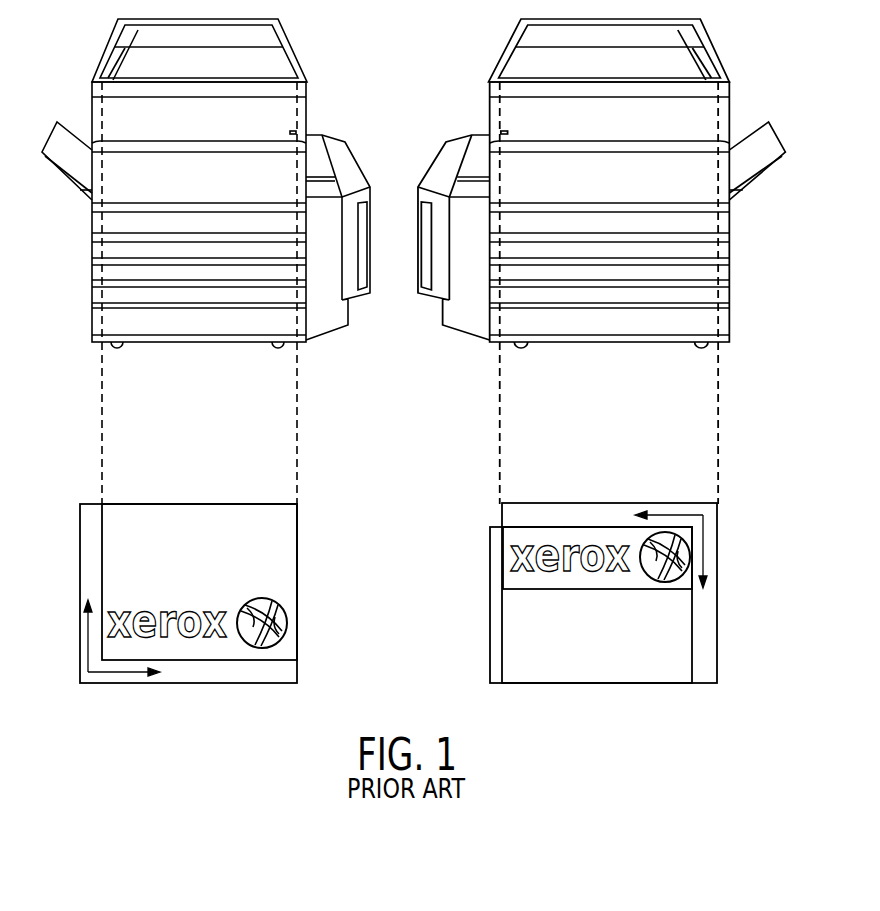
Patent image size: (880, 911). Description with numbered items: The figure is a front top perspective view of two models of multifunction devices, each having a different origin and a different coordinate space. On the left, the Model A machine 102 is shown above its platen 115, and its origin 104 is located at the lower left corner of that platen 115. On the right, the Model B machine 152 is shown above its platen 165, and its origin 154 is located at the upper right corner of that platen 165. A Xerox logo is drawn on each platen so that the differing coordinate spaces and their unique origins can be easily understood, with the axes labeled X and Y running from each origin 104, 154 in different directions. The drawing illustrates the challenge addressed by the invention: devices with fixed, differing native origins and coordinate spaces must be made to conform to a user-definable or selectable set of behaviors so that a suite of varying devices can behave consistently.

The first printer (Model A) 102 is at (200, 342).
The second printer (Model B) 152 is at (597, 342).
The origin 104 is at (87, 683).
The platen 115 is at (223, 672).
The origin 154 is at (710, 510).
The platen 165 is at (710, 620).